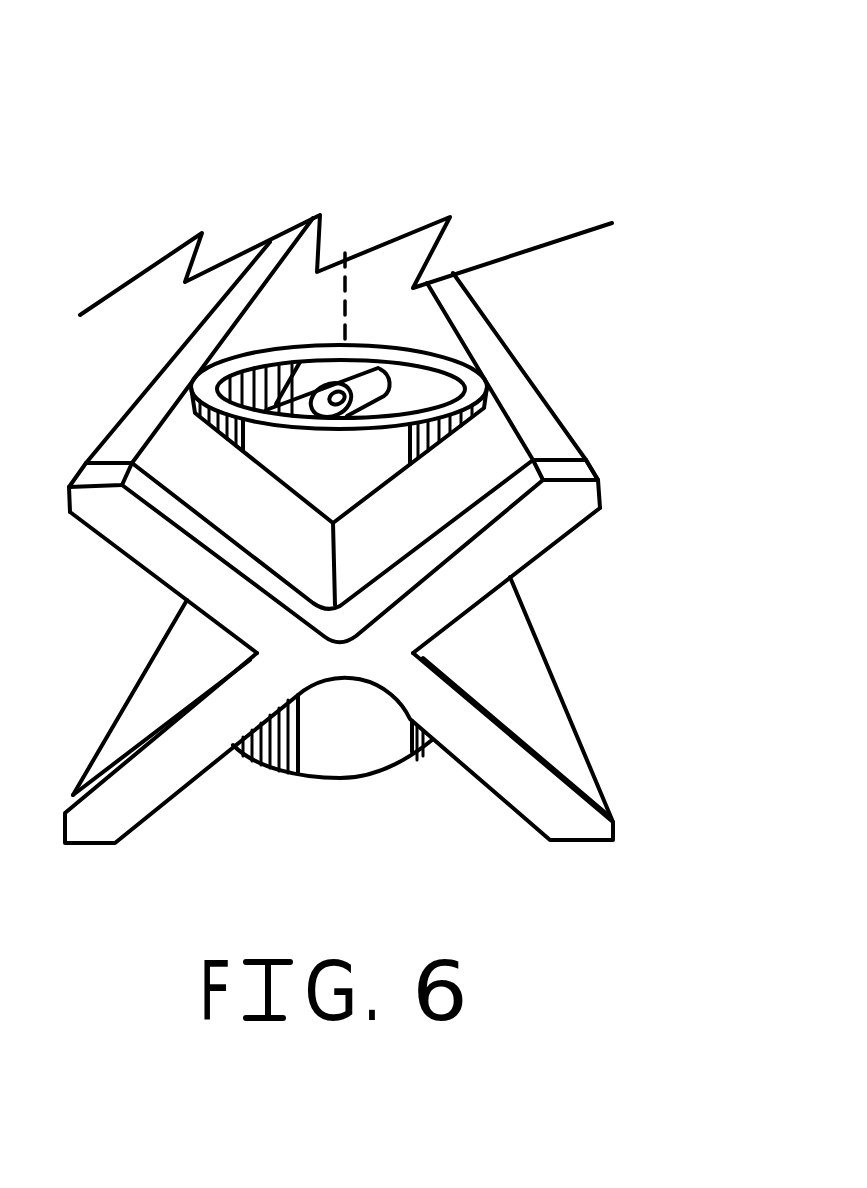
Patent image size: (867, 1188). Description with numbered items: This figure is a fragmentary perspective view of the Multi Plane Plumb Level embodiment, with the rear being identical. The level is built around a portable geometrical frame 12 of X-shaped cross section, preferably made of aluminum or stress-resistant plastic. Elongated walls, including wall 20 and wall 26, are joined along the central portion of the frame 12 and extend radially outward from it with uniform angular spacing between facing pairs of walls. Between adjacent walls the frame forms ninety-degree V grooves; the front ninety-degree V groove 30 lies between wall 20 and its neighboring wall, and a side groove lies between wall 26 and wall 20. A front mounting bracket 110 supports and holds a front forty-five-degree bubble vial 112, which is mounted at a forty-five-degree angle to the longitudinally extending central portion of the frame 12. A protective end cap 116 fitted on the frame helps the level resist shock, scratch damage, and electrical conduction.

The front 90-degree V groove 30 is at (387, 117).
The elongated wall 20 is at (275, 333).
The elongated wall 26 is at (446, 320).
The front mounting bracket 110 is at (484, 360).
The portable geometrical frame 12 is at (549, 410).
The front 45-degree bubble vial 112 is at (583, 400).
The protective end cap 116 is at (338, 748).